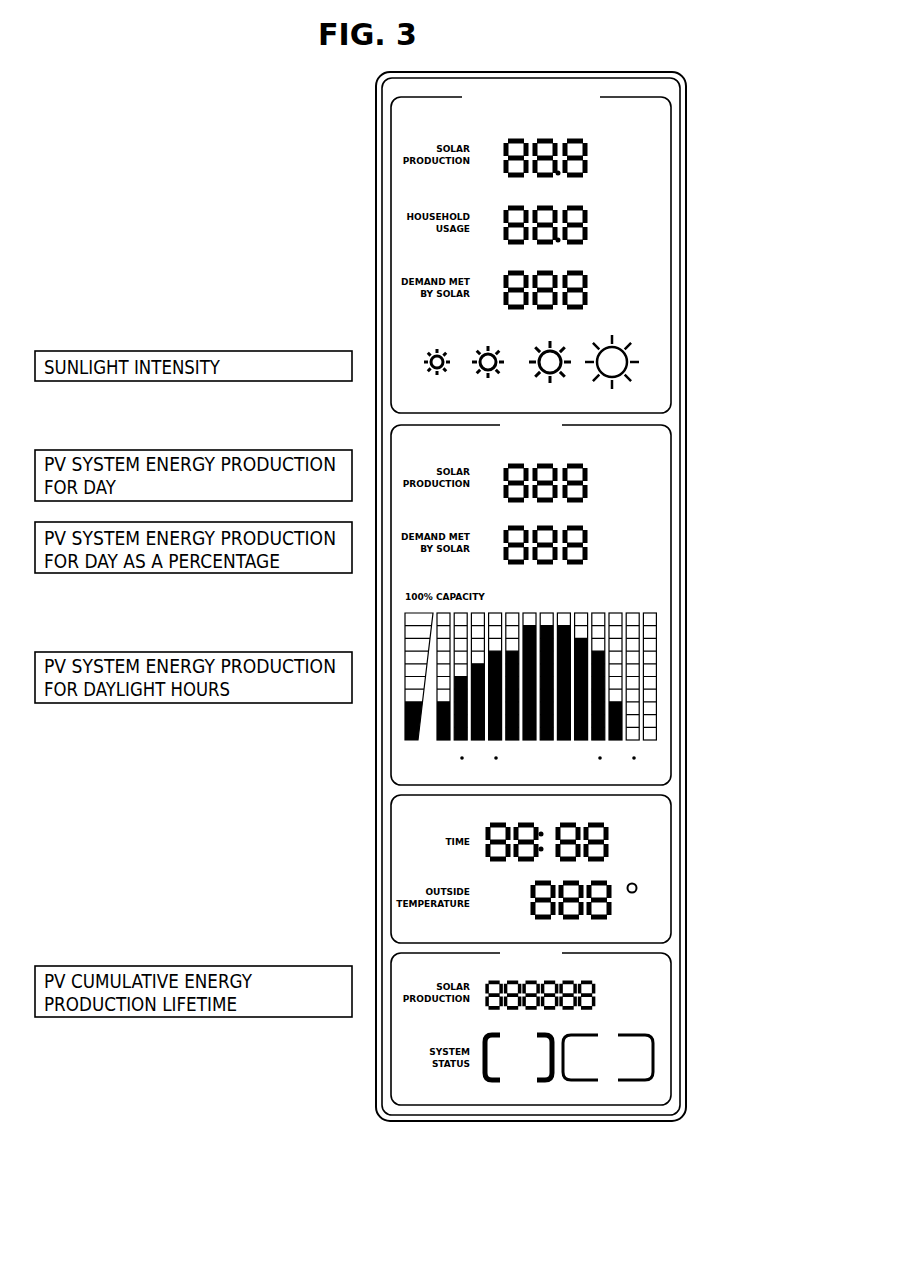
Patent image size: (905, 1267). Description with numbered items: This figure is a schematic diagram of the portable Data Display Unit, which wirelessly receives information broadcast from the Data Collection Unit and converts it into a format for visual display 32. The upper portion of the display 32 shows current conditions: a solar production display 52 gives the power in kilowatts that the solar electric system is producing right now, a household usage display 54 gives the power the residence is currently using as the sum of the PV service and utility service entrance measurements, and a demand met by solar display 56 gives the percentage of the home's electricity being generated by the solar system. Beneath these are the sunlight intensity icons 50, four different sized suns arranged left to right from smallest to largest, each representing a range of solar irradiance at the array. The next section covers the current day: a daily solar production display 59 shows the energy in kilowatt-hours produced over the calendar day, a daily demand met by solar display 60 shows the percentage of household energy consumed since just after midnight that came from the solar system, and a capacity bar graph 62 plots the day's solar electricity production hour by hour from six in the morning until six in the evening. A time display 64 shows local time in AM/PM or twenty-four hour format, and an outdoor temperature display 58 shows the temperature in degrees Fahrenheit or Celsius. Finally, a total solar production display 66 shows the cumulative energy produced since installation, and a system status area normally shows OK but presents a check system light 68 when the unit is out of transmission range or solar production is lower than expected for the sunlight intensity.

The visual display 32 is at (680, 72).
The solar production display 52 is at (652, 168).
The household usage display 54 is at (650, 238).
The demand met by solar display 56 is at (650, 298).
The sunlight intensity icons 50 is at (655, 372).
The daily solar production display 59 is at (655, 487).
The daily demand met by solar display 60 is at (658, 553).
The capacity bar graph 62 is at (657, 675).
The time display 64 is at (663, 840).
The outdoor temperature display 58 is at (660, 905).
The total solar production display 66 is at (660, 988).
The check system light 68 is at (570, 1100).